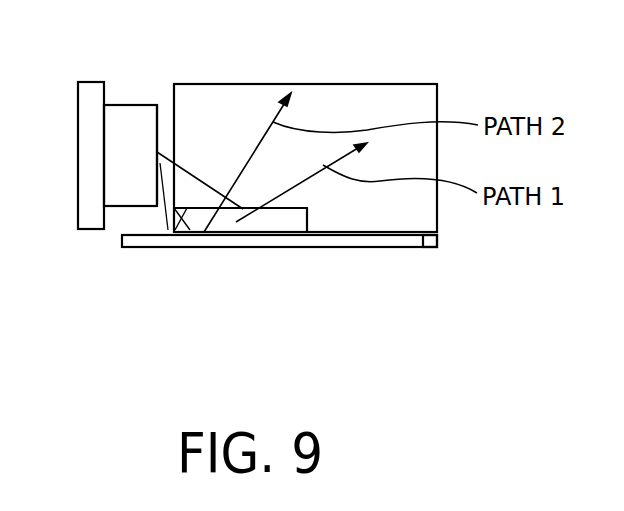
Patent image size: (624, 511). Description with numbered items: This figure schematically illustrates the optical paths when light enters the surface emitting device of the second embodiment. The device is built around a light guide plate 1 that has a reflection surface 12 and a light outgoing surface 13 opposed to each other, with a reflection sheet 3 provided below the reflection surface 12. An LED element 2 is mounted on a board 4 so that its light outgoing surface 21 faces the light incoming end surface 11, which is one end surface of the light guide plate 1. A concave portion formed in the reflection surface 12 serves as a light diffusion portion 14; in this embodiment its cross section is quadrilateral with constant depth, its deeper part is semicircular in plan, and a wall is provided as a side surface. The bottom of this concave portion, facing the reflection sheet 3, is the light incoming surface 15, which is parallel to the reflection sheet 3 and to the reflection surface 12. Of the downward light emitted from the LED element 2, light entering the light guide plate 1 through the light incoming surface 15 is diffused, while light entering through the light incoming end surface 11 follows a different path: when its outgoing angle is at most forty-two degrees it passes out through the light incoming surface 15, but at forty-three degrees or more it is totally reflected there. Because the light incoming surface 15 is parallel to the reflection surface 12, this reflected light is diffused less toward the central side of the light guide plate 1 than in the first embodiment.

The light guide plate 1 is at (413, 98).
The light outgoing surface 13 is at (358, 82).
The LED element 2 is at (122, 103).
The light outgoing surface of the LED element 21 is at (163, 113).
The board 4 is at (78, 118).
The light incoming end surface 11 is at (173, 138).
The light diffusion portion 14 is at (170, 233).
The light incoming surface 15 is at (233, 225).
The reflection sheet 3 is at (388, 250).
The reflection surface 12 is at (425, 250).